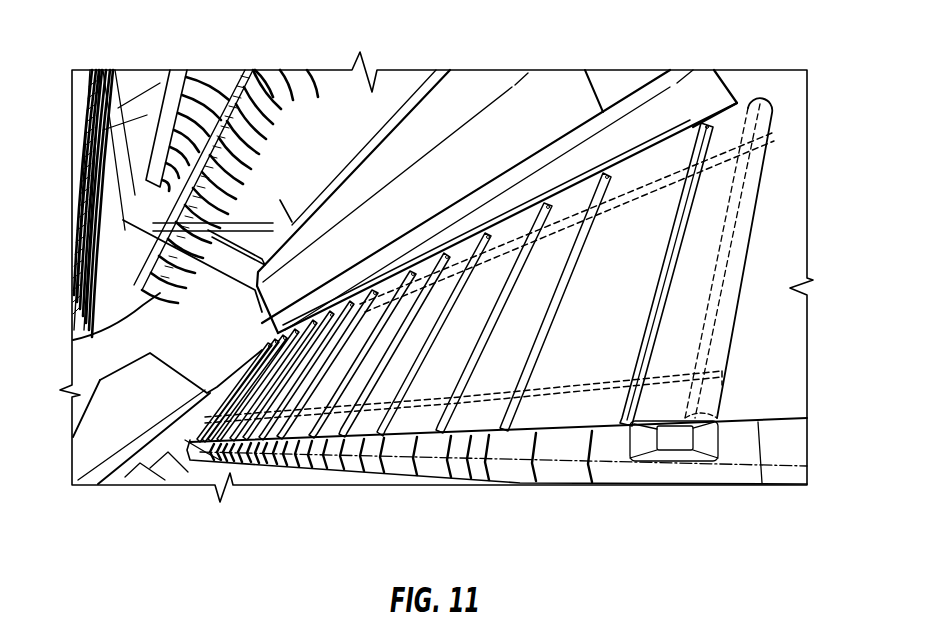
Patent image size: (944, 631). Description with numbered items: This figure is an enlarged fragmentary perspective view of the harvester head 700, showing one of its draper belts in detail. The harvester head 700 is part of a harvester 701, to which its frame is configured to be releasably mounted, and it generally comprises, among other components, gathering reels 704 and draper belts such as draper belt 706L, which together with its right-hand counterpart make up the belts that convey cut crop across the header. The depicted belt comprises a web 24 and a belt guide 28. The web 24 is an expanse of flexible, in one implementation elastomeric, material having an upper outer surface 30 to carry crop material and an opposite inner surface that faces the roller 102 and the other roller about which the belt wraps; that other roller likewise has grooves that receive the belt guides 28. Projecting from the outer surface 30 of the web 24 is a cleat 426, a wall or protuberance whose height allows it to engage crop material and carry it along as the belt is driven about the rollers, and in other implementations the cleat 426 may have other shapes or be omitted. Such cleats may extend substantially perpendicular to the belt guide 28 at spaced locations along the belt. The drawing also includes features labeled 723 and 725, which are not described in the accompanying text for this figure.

The web 24 is at (573, 420).
The belt guide 28 is at (732, 155).
The upper outer surface 30 is at (606, 300).
The roller 102 is at (770, 100).
The cleat 426 is at (697, 208).
The harvester head 700 is at (63, 283).
The harvester 701 is at (48, 214).
The gathering reels 704 is at (178, 75).
The draper belt 706L is at (477, 430).
The cross rods 723 is at (420, 420).
The panel corner 725 is at (695, 130).